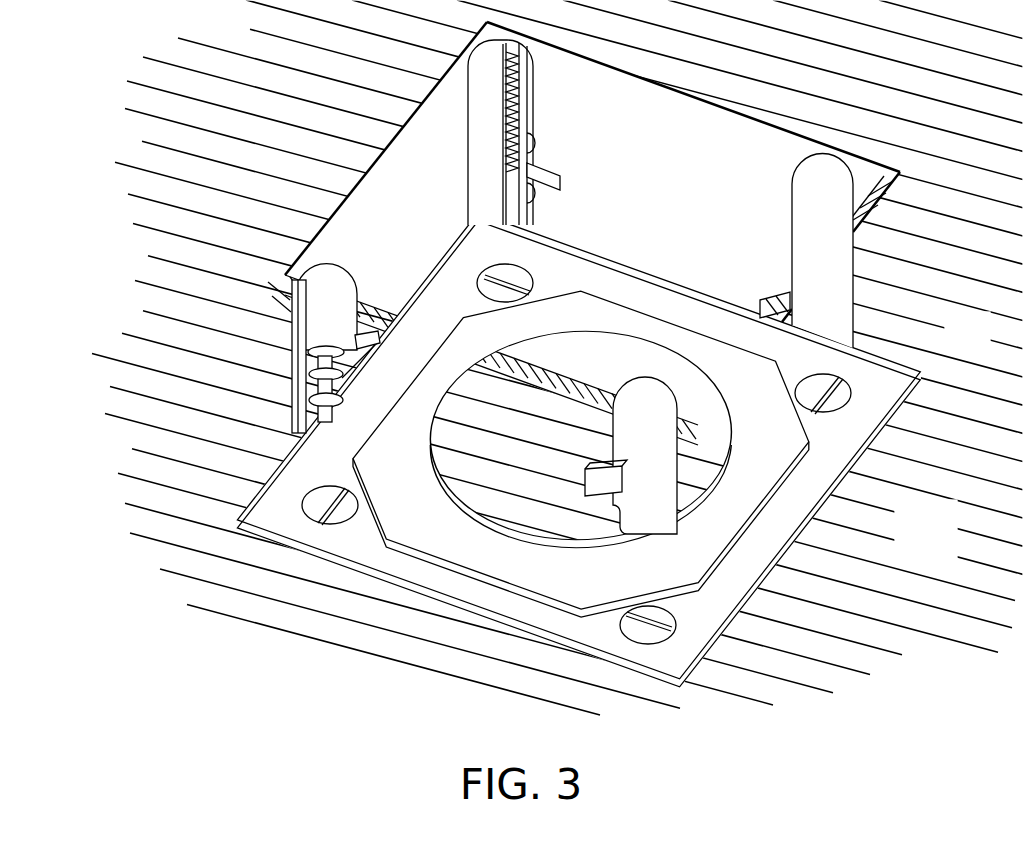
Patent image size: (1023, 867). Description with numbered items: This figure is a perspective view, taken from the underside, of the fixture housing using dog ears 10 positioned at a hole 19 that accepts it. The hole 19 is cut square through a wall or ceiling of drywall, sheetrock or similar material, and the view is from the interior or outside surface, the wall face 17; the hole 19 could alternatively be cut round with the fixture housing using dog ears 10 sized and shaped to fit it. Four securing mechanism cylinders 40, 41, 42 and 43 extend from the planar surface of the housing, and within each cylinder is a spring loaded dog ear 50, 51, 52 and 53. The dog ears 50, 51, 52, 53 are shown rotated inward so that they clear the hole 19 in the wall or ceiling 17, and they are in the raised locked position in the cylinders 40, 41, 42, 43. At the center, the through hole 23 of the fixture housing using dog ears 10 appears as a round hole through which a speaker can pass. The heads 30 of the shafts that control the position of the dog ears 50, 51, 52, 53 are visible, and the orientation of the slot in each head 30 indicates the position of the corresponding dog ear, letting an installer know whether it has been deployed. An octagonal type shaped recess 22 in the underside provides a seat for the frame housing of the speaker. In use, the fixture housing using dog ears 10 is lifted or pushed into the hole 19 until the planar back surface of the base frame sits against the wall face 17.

The fixture housing using dog ears 10 is at (910, 338).
The wall face 17 is at (947, 553).
The hole 19 is at (388, 152).
The octagonal type shaped recess 22 is at (571, 609).
The through hole 23 is at (522, 545).
The head of shaft 30 is at (662, 632).
The securing mechanism cylinder 40 is at (637, 378).
The securing mechanism cylinder 41 is at (332, 270).
The securing mechanism cylinder 42 is at (531, 112).
The securing mechanism cylinder 43 is at (790, 204).
The dog ear 50 is at (600, 466).
The dog ear 51 is at (373, 338).
The dog ear 52 is at (561, 180).
The dog ear 53 is at (768, 303).